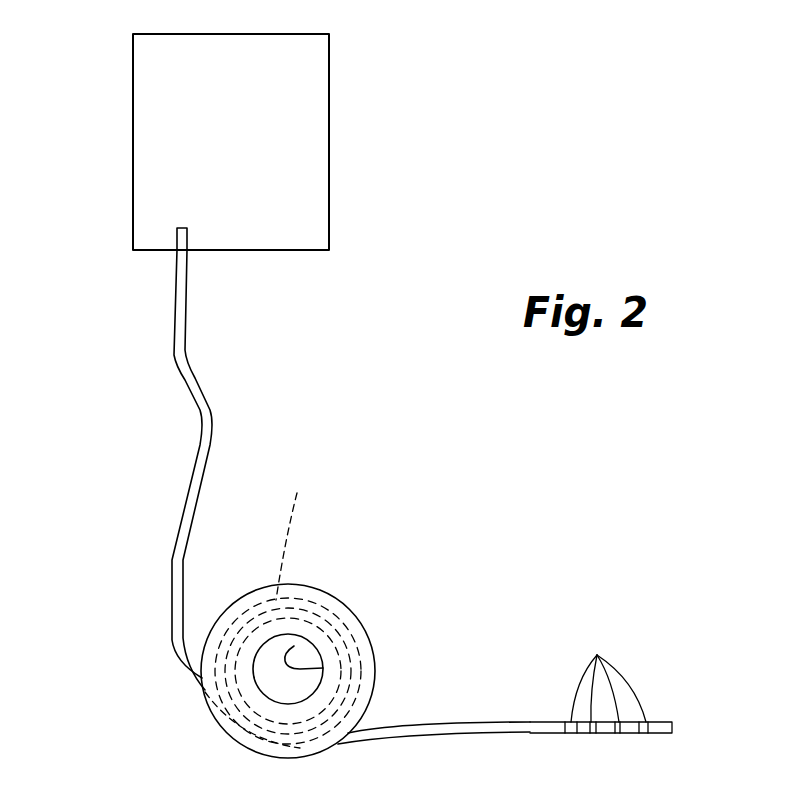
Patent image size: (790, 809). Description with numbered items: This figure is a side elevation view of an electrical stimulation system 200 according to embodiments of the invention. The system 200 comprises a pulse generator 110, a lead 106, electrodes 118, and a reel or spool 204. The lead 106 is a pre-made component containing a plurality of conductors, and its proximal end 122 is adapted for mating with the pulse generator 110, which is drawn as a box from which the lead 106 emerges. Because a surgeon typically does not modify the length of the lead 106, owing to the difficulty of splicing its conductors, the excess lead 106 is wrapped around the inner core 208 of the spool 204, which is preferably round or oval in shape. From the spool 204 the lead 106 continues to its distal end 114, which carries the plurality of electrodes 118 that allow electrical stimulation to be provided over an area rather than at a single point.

The electrical stimulation system 200 is at (455, 210).
The pulse generator 110 is at (330, 118).
The proximal end 122 is at (155, 260).
The lead 106 is at (188, 328).
The spool 204 is at (343, 557).
The inner core 208 is at (294, 646).
The distal end 114 is at (647, 588).
The electrodes 118 is at (608, 672).